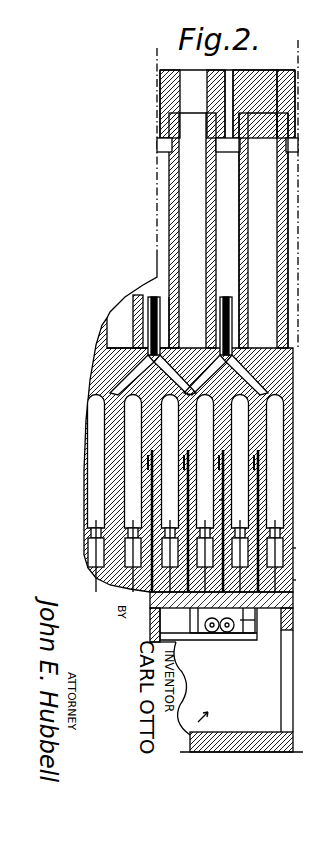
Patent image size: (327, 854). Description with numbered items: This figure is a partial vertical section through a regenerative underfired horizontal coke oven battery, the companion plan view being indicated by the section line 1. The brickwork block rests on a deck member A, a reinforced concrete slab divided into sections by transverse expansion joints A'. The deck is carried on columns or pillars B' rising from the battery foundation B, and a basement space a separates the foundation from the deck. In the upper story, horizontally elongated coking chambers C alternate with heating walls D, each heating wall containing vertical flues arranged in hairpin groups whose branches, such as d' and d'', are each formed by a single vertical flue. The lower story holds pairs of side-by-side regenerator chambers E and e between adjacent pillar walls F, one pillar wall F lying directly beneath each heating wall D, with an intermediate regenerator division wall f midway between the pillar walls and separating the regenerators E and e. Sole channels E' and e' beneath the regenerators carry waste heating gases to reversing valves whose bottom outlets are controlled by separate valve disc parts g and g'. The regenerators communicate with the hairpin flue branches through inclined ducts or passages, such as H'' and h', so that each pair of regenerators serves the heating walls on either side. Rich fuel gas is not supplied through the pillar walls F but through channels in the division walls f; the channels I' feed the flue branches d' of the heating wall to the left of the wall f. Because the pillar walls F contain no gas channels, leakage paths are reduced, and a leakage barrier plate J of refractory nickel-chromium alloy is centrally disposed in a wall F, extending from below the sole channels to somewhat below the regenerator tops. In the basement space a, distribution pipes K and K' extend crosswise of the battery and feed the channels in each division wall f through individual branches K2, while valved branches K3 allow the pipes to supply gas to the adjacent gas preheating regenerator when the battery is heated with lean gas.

The section line 1 is at (300, 52).
The coking chamber C is at (227, 209).
The heating wall D is at (248, 203).
The hairpin flue branch d' is at (146, 193).
The port d'' is at (257, 196).
The chamber H'' is at (138, 299).
The inclined duct or passage h' is at (190, 314).
The regenerator chamber e is at (168, 462).
The regenerator chamber E is at (204, 462).
The sole channel e' is at (168, 547).
The sole channel E' is at (204, 547).
The intermediate regenerator division wall f is at (98, 398).
The pillar wall F is at (143, 422).
The channel I' is at (219, 451).
The leakage barrier plate J is at (220, 503).
The valve disc part g is at (307, 553).
The valve disc part g' is at (307, 583).
The deck member A is at (207, 617).
The expansion joint A' is at (218, 618).
The battery foundation B is at (241, 757).
The column or pillar B' is at (295, 681).
The basement space a is at (190, 746).
The distribution pipe K is at (233, 639).
The distribution pipe K' is at (219, 643).
The branch K2 is at (194, 633).
The valved branch K3 is at (212, 633).